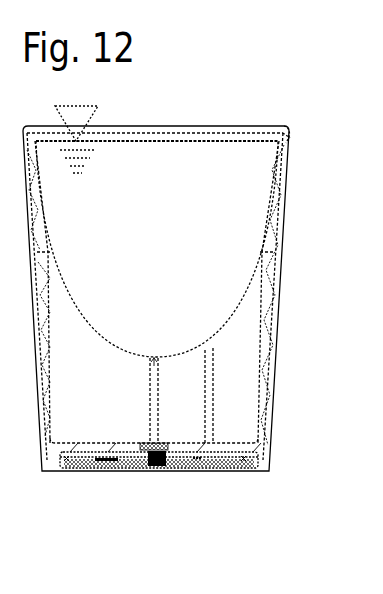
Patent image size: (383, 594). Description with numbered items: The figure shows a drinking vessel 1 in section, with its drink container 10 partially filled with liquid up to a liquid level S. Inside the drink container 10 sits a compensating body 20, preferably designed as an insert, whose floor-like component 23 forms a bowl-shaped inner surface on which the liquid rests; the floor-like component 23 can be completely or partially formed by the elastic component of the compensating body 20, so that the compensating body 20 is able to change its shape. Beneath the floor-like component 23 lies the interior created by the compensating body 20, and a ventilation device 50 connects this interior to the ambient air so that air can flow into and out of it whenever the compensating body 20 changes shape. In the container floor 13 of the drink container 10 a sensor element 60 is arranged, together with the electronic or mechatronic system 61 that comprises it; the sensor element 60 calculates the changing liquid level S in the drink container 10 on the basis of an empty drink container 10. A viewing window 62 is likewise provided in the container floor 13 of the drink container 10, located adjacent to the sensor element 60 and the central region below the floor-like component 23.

The drinking vessel 1 is at (205, 97).
The drink container 10 is at (279, 266).
The container floor 13 is at (100, 447).
The compensating body 20 is at (286, 130).
The floor-like component 23 is at (230, 324).
The ventilation device 50 is at (213, 379).
The sensor element 60 is at (159, 465).
The electronic or mechatronic system 61 is at (121, 463).
The viewing window 62 is at (146, 442).
The liquid level S is at (163, 142).